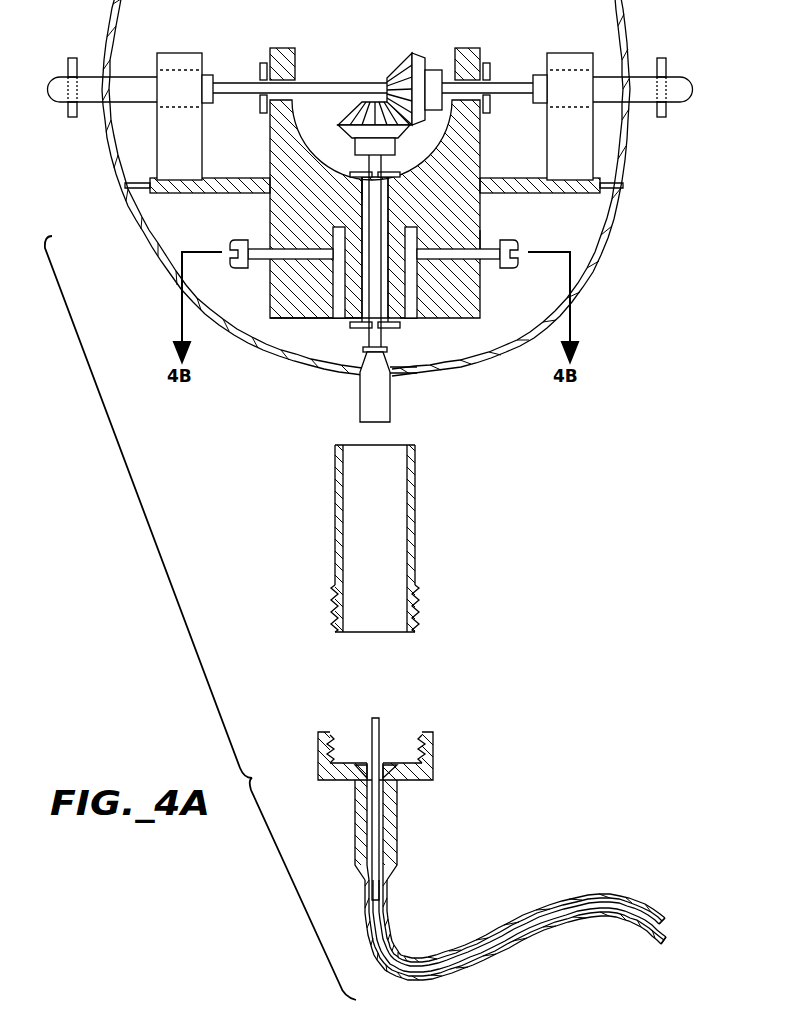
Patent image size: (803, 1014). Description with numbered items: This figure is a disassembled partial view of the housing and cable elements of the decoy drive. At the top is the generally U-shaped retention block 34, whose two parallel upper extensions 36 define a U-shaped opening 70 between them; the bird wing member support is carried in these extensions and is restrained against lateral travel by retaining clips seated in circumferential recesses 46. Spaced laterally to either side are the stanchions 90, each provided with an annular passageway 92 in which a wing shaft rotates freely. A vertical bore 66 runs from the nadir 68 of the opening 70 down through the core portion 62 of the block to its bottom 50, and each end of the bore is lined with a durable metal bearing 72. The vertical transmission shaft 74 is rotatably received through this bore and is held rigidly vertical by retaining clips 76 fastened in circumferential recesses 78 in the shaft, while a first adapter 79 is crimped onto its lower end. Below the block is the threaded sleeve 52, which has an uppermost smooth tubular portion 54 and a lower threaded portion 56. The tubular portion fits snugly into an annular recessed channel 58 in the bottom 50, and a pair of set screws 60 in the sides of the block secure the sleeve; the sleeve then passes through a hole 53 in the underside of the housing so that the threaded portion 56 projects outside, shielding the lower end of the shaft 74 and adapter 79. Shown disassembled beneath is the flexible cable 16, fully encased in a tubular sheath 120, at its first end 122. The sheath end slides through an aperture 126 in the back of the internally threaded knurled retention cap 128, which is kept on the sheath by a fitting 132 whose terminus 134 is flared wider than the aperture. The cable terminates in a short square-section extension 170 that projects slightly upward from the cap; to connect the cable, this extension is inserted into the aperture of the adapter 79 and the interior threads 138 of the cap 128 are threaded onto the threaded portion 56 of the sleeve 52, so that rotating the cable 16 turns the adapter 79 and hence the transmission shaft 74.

The flexible cable 16 is at (667, 922).
The retention block 34 is at (482, 243).
The upper extensions 36 is at (470, 48).
The circumferential recesses 46 is at (495, 90).
The bottom of the retention block 50 is at (297, 320).
The threaded sleeve 52 is at (373, 538).
The hole 53 is at (405, 373).
The tubular portion 54 is at (335, 495).
The threaded portion 56 is at (330, 600).
The annular recessed channel 58 is at (413, 320).
The set screws 60 is at (508, 268).
The core portion 62 is at (407, 280).
The vertical bore 66 is at (422, 220).
The nadir 68 is at (359, 191).
The U-shaped opening 70 is at (315, 120).
The bearings 72 is at (362, 185).
The vertical transmission shaft 74 is at (386, 332).
The retaining clips 76 is at (402, 324).
The circumferential recesses 78 is at (365, 348).
The first adapter 79 is at (358, 408).
The stanchions 90 is at (195, 147).
The annular passageway 92 is at (557, 70).
The tubular sheath 120 is at (503, 948).
The first end 122 is at (541, 908).
The aperture 126 is at (412, 780).
The first retention cap 128 is at (397, 756).
The fitting 132 is at (357, 787).
The terminus 134 is at (360, 767).
The interior threads 138 is at (412, 750).
The extension 170 is at (376, 718).